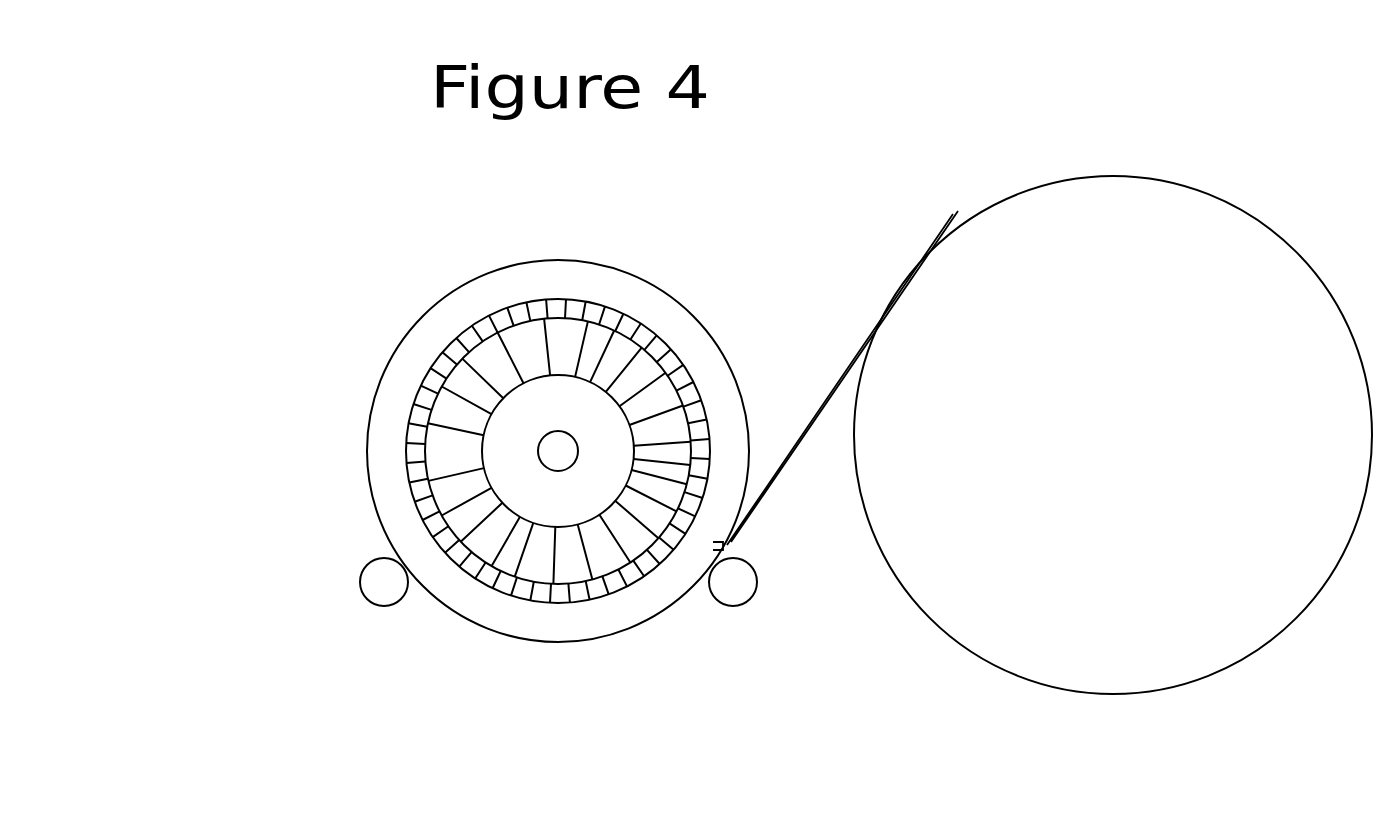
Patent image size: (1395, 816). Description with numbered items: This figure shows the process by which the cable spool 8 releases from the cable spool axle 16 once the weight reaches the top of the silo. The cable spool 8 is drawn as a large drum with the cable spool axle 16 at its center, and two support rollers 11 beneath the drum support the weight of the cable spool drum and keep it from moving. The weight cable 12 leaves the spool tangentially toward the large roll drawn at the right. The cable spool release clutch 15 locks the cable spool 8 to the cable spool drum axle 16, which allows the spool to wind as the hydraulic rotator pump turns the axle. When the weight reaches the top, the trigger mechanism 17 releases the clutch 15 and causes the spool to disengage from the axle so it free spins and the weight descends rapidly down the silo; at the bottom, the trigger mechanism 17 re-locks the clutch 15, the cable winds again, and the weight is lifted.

The cable spool 8 is at (398, 338).
The support rollers 11 is at (353, 607).
The weight cable 12 is at (848, 388).
The cable spool release clutch 15 is at (402, 458).
The cable spool axle 16 is at (533, 445).
The trigger mechanism 17 is at (730, 543).